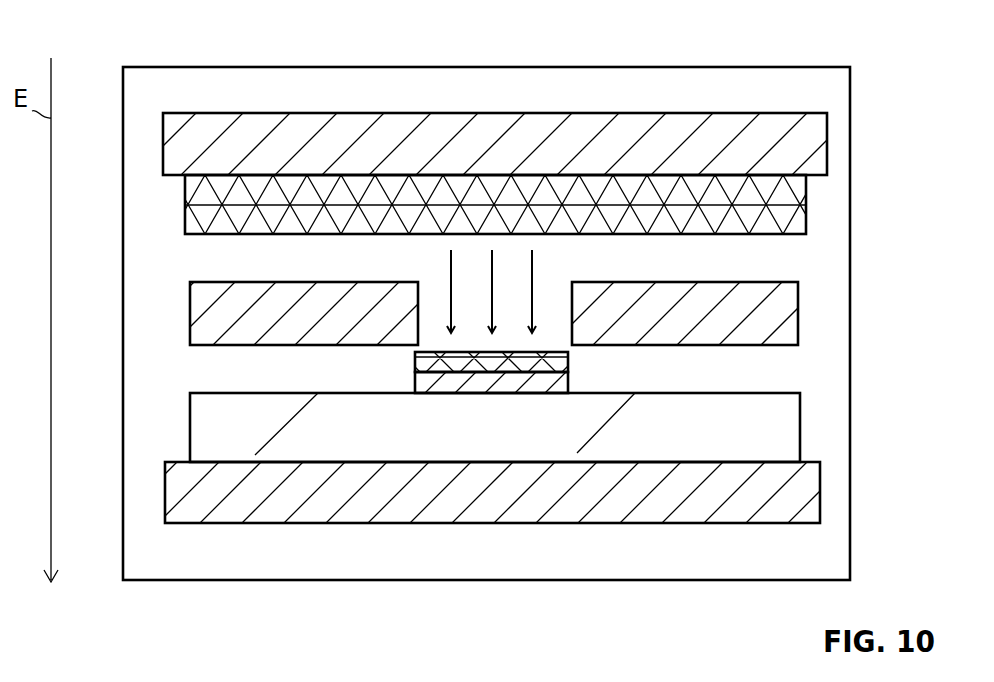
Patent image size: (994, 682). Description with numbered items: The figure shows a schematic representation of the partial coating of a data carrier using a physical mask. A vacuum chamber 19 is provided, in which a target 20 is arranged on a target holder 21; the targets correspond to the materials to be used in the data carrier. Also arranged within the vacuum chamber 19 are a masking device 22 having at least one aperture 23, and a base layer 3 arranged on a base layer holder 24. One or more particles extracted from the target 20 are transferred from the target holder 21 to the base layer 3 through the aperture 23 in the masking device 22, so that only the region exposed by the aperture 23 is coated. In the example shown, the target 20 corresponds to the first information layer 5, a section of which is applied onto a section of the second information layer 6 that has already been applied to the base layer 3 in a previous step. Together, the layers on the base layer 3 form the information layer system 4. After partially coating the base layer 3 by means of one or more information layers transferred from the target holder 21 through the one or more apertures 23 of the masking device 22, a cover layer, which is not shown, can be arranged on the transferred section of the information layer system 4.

The vacuum chamber 19 is at (370, 67).
The target holder 21 is at (488, 128).
The target 20 is at (198, 200).
The first information layer 5 is at (560, 362).
The aperture 23 is at (561, 291).
The masking device 22 is at (787, 314).
The information layer system 4 is at (523, 368).
The second information layer 6 is at (562, 387).
The base layer 3 is at (198, 427).
The base layer holder 24 is at (233, 510).